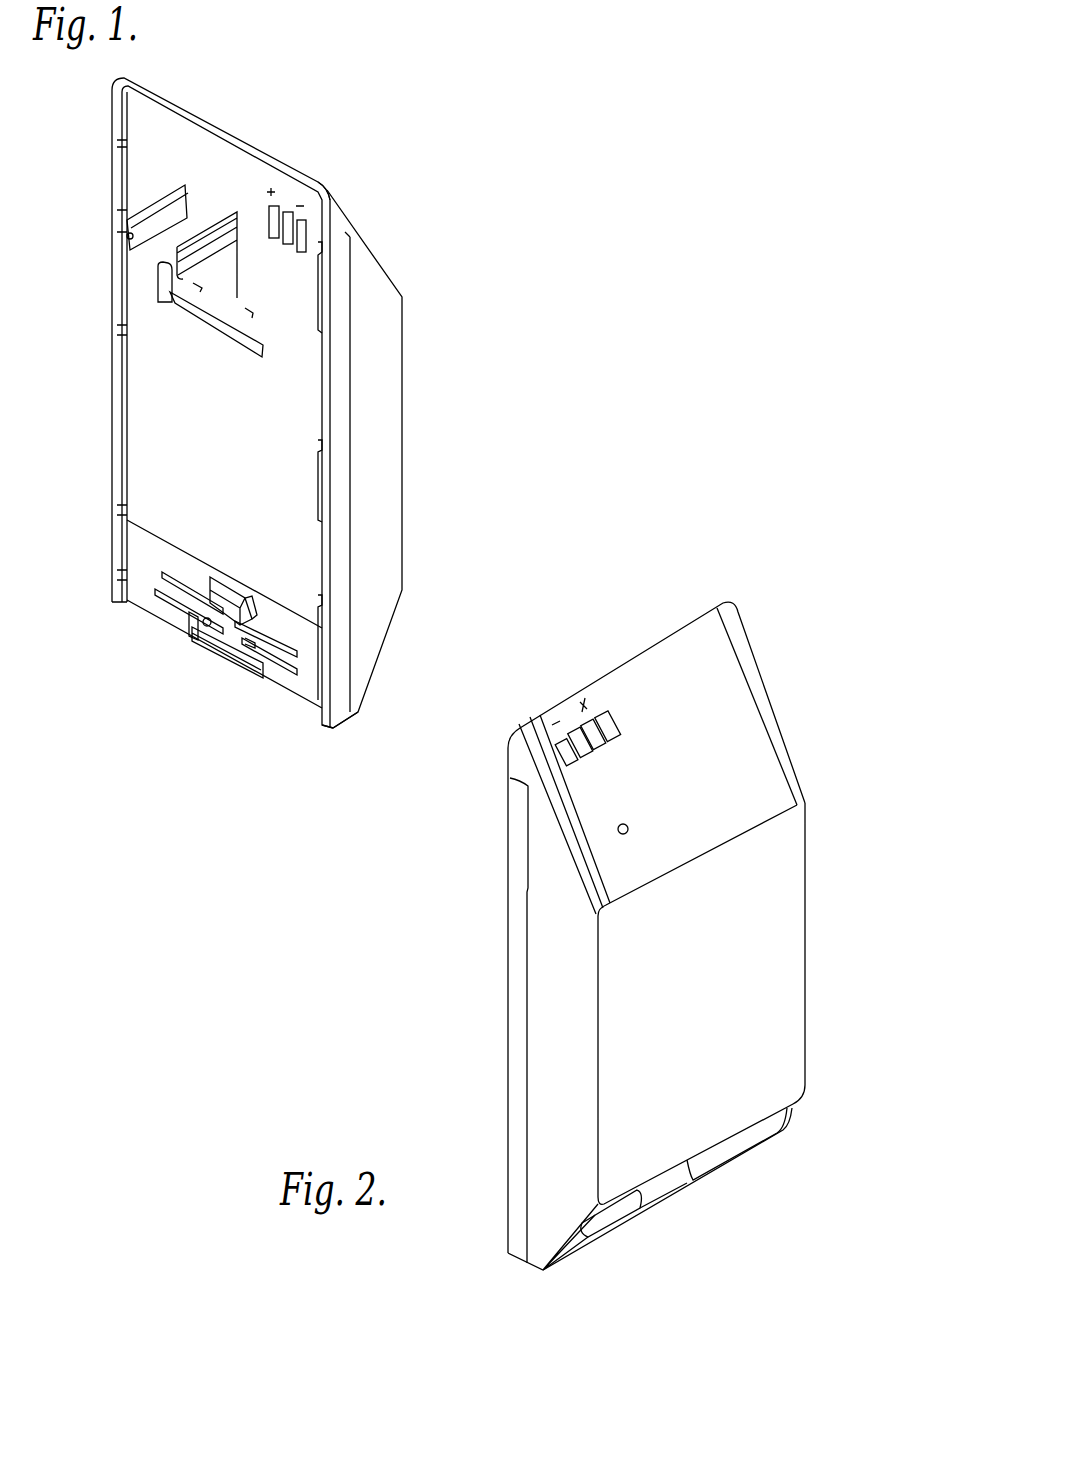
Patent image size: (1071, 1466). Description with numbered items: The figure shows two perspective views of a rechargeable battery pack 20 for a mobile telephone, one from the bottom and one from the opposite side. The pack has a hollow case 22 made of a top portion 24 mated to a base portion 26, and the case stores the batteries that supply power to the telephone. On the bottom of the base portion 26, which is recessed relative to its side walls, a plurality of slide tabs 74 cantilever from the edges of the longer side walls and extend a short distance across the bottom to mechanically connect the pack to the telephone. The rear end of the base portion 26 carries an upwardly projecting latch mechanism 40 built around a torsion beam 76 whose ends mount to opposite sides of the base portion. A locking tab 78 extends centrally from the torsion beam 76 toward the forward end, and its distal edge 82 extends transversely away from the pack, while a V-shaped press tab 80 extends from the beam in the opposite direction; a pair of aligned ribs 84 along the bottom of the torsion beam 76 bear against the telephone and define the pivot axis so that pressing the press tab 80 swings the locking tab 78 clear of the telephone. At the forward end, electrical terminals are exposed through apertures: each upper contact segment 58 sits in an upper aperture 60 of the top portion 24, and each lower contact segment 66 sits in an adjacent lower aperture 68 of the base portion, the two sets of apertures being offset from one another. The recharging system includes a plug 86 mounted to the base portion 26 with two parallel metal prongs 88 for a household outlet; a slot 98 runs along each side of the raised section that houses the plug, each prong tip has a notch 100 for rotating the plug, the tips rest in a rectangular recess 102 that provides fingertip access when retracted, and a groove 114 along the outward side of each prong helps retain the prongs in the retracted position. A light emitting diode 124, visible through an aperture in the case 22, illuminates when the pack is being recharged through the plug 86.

In FIG. 1, the battery pack 20 is at (617, 245).
In FIG. 2, the battery pack 20 is at (731, 484).
In FIG. 1, the case 22 is at (357, 745).
In FIG. 2, the case 22 is at (511, 1275).
In FIG. 1, the top portion 24 is at (410, 420).
In FIG. 2, the top portion 24 is at (813, 948).
In FIG. 1, the base portion 26 is at (176, 448).
In FIG. 2, the base portion 26 is at (500, 978).
In FIG. 1, the latch mechanism 40 is at (205, 670).
In FIG. 2, the upper contact segment 58 is at (613, 741).
In FIG. 2, the upper apertures 60 is at (542, 660).
In FIG. 1, the lower contact segment 66 is at (301, 254).
In FIG. 1, the lower apertures 68 is at (302, 200).
In FIG. 1, the slide tabs 74 is at (114, 180).
In FIG. 1, the torsion beam 76 is at (168, 587).
In FIG. 1, the locking tab 78 is at (237, 574).
In FIG. 1, the press tab 80 is at (237, 668).
In FIG. 1, the distal edge 82 is at (223, 578).
In FIG. 1, the ribs 84 is at (260, 637).
In FIG. 1, the plug 86 is at (143, 291).
In FIG. 1, the prongs 88 is at (141, 226).
In FIG. 1, the slots 98 is at (168, 263).
In FIG. 1, the notch 100 is at (130, 237).
In FIG. 1, the rectangular recess 102 is at (237, 325).
In FIG. 1, the groove 114 is at (220, 222).
In FIG. 2, the light emitting diode 124 is at (617, 830).